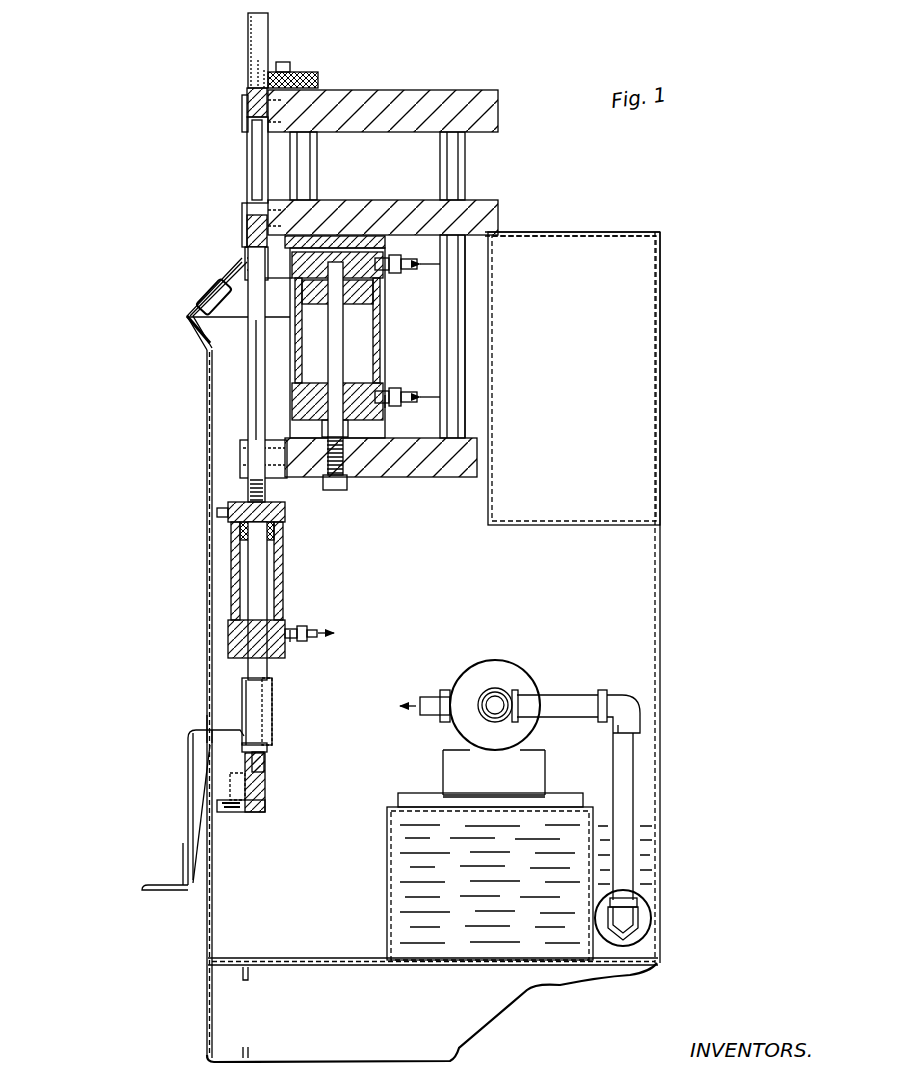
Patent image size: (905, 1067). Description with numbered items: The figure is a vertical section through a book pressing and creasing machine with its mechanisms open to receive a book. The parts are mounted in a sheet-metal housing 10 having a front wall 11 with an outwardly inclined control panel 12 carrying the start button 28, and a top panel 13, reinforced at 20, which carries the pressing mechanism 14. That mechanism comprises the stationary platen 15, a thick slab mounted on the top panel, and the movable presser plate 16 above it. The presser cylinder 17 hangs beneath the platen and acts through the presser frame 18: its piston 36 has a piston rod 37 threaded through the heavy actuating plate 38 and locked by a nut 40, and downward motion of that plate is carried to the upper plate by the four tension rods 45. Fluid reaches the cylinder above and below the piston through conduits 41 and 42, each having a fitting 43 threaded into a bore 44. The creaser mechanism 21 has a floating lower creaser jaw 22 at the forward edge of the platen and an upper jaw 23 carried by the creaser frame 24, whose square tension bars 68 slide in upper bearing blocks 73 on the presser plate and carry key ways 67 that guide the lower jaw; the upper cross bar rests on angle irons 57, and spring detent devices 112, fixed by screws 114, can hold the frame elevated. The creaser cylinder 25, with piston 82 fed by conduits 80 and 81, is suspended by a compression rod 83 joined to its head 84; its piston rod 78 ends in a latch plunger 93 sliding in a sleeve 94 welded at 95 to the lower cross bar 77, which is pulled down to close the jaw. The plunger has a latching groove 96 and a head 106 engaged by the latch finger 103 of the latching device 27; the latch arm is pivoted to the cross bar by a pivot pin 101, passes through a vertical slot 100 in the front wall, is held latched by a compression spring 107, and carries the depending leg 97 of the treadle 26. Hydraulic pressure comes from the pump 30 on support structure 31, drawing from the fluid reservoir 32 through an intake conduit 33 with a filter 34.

The housing 10 is at (663, 392).
The front wall 11 is at (207, 551).
The control panel 12 is at (190, 313).
The top panel 13 is at (585, 232).
The pressing mechanism 14 is at (391, 83).
The platen 15 is at (492, 212).
The movable presser plate 16 is at (385, 96).
The hydraulic cylinder 17 is at (341, 337).
The presser frame 18 is at (468, 352).
The reinforcement 20 is at (492, 486).
The creaser mechanism 21 is at (245, 176).
The lower creaser jaw 22 is at (245, 243).
The upper jaw 23 is at (247, 90).
The creaser frame 24 is at (248, 392).
The creaser cylinder 25 is at (285, 586).
The treadle 26 is at (165, 885).
The latching device 27 is at (235, 740).
The start button 28 is at (205, 290).
The hydraulic pump 30 is at (512, 670).
The support structure 31 is at (424, 794).
The fluid reservoir 32 is at (387, 890).
The intake conduit 33 is at (625, 860).
The filter 34 is at (652, 921).
The piston 36 is at (378, 300).
The piston rod 37 is at (330, 356).
The actuating plate 38 is at (442, 464).
The nut 40 is at (342, 490).
The upper conduit 41 is at (420, 258).
The lower conduit 42 is at (410, 392).
The fitting 43 is at (388, 408).
The bores 44 is at (362, 240).
The tension rods 45 is at (307, 163).
The angle irons 57 is at (480, 298).
The key ways 67 is at (253, 155).
The tension bars 68 is at (258, 38).
The upper bearing blocks 73 is at (242, 111).
The lower cross bar 77 is at (267, 794).
The piston rod 78 is at (260, 605).
The upper conduit 80 is at (224, 508).
The lower conduit 81 is at (313, 640).
The piston 82 is at (282, 555).
The compression rod 83 is at (252, 354).
The cylinder head 84 is at (272, 506).
The latch plunger 93 is at (270, 703).
The sleeve 94 is at (243, 700).
The weld 95 is at (268, 748).
The latching groove 96 is at (268, 728).
The leg 97 is at (190, 786).
The vertical slot 100 is at (207, 720).
The pivot pin 101 is at (267, 810).
The latch finger 103 is at (234, 777).
The plunger head 106 is at (266, 768).
The compression spring 107 is at (230, 815).
The detent devices 112 is at (303, 72).
The screws 114 is at (291, 56).